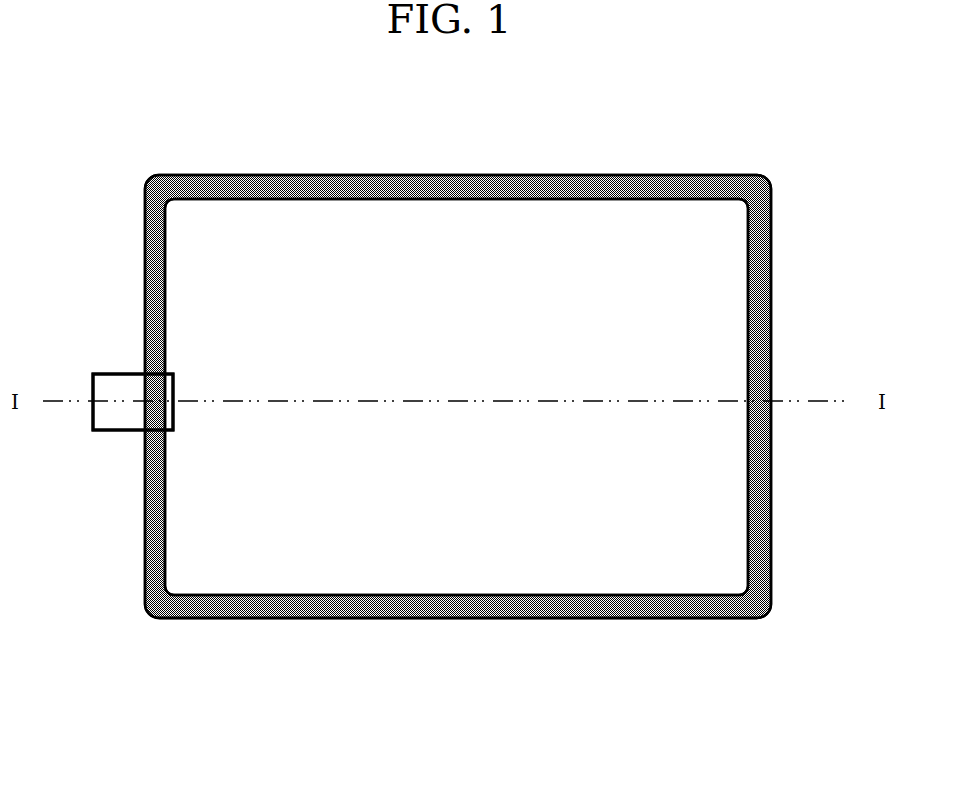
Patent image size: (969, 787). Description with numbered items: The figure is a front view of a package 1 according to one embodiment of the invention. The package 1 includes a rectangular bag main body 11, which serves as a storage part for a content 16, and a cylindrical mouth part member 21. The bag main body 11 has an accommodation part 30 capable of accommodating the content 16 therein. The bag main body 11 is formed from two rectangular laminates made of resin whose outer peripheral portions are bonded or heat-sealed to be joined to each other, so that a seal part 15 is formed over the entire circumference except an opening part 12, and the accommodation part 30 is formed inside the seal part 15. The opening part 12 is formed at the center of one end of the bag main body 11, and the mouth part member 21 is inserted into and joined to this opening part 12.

The package 1 is at (788, 216).
The bag main body 11 is at (772, 582).
The opening part 12 is at (138, 372).
The seal part 15 is at (418, 612).
The content 16 is at (294, 257).
The mouth part member 21 is at (121, 436).
The accommodation part 30 is at (497, 263).